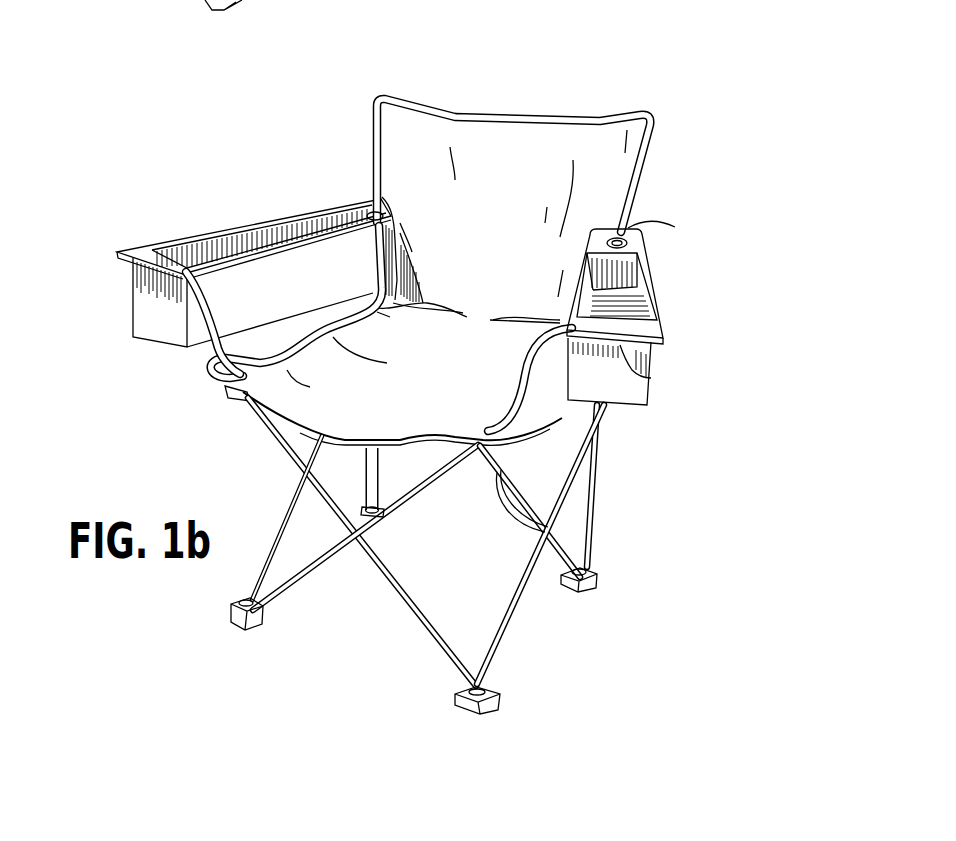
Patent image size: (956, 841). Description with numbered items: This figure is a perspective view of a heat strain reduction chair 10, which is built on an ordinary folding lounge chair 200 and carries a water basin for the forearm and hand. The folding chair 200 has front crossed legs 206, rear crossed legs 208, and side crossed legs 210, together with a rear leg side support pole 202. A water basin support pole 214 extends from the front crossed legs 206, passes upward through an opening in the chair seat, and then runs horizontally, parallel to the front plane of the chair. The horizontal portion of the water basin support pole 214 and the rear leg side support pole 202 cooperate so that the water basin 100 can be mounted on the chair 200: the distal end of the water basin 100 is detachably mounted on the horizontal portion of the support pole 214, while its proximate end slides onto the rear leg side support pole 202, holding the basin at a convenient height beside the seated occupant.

The heat strain reduction chair 10 is at (457, 110).
The water basin 100 is at (230, 232).
The chair 200 is at (548, 150).
The rear leg side support pole 202 is at (634, 226).
The front crossed legs 206 is at (432, 646).
The rear crossed legs 208 is at (540, 532).
The side crossed legs 210 is at (567, 472).
The water basin support pole 214 is at (640, 362).